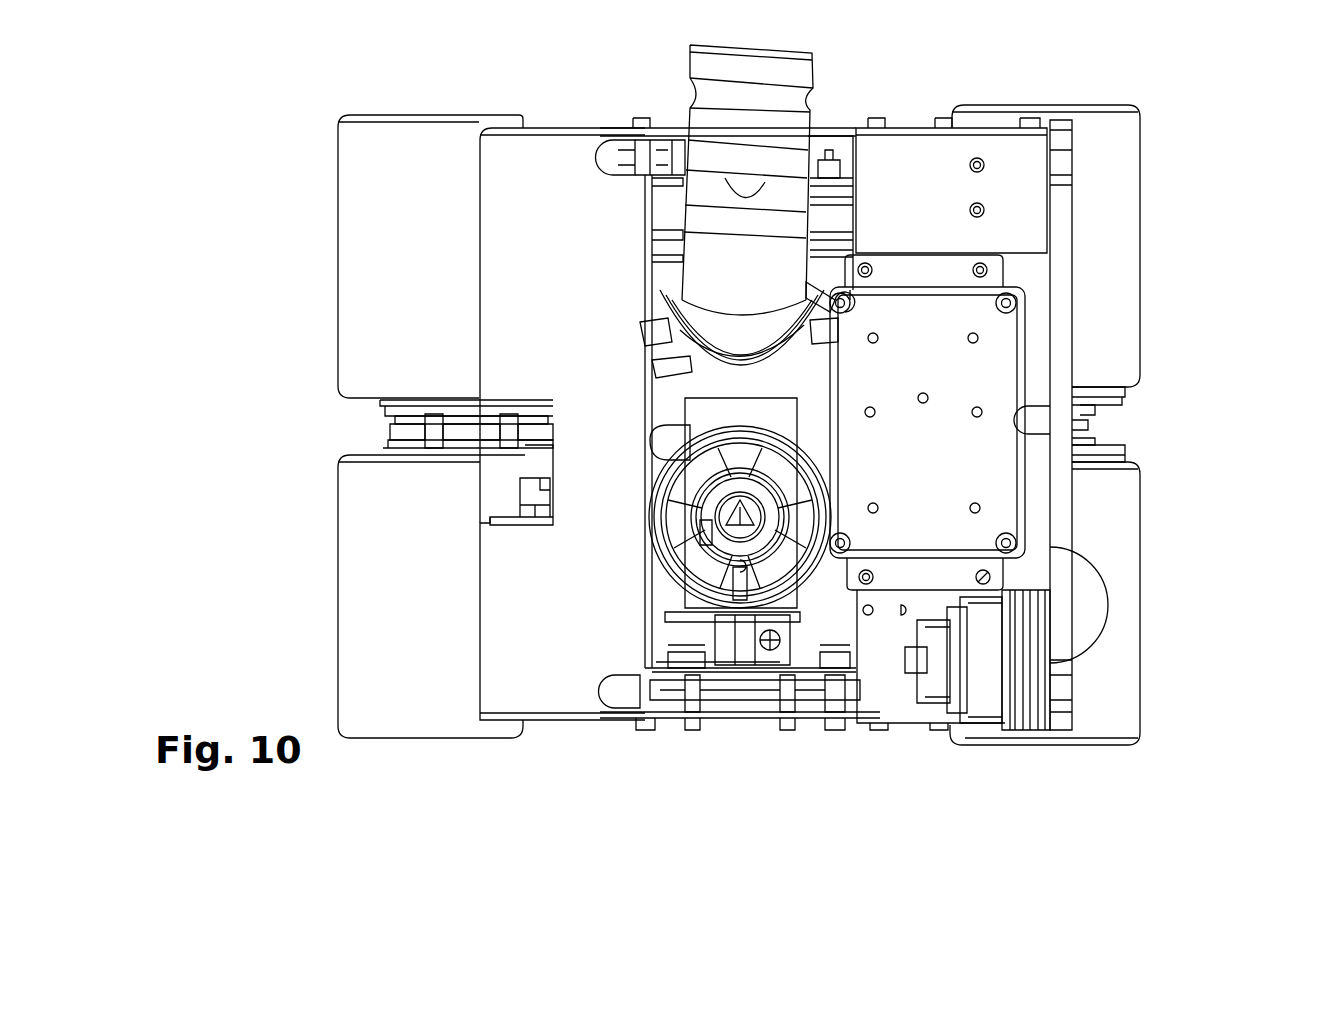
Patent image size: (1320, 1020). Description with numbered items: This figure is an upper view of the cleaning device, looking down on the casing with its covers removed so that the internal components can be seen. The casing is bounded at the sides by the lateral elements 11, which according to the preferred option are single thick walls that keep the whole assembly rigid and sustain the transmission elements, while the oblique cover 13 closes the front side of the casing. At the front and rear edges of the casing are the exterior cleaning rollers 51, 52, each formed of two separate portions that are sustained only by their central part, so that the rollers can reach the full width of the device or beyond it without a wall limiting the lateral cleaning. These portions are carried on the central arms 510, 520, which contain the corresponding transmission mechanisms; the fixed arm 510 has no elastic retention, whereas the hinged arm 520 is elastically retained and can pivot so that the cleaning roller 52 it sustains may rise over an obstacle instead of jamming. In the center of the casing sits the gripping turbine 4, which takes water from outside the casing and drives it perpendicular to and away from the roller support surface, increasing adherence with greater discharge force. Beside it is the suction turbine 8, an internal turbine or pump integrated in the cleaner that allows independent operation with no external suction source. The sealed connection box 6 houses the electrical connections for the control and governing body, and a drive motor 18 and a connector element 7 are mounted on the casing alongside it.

The gripping turbine 4 is at (693, 568).
The sealed connection box 6 is at (920, 530).
The connector bulge 7 is at (1100, 592).
The suction turbine 8 is at (665, 275).
The lateral element 11 is at (1019, 235).
The oblique cover 13 is at (520, 662).
The motor 18 is at (1026, 705).
The exterior cleaning roller 51 is at (1102, 207).
The exterior cleaning roller 52 is at (370, 325).
The fixed arm 510 is at (1085, 407).
The hinged arm 520 is at (388, 440).